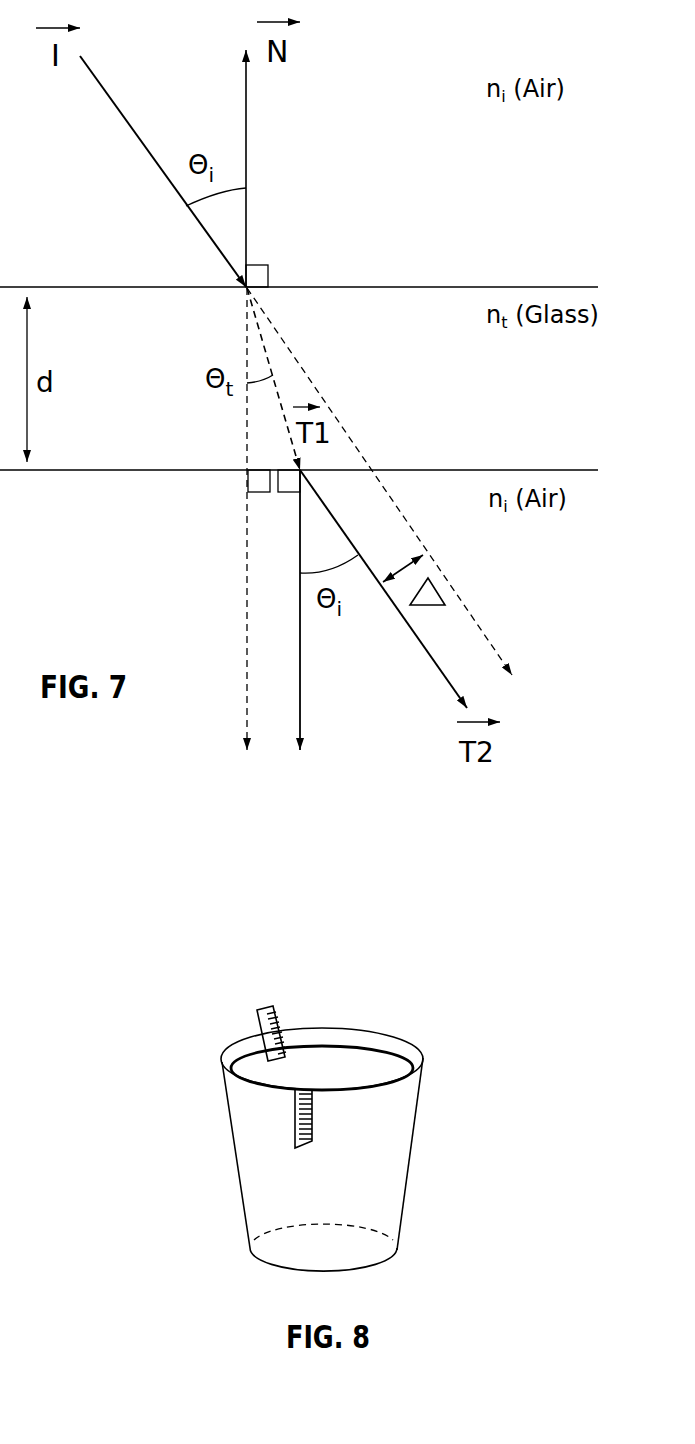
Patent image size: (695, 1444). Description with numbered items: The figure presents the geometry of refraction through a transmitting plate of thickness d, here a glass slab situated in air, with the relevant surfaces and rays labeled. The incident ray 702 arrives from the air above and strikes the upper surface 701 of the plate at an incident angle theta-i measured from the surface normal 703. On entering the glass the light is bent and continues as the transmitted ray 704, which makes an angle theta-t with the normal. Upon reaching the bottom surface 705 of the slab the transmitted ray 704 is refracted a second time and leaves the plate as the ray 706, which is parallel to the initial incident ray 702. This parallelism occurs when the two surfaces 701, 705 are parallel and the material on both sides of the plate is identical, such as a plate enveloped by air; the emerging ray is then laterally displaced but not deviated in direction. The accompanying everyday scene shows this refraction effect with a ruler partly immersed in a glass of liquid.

The first surface of glass plate 701 is at (68, 287).
The incident ray 702 is at (165, 175).
The surface normal 703 is at (246, 136).
The transmitted ray 704 is at (270, 368).
The second surface of glass plate 705 is at (160, 470).
The emerging ray 706 is at (433, 668).